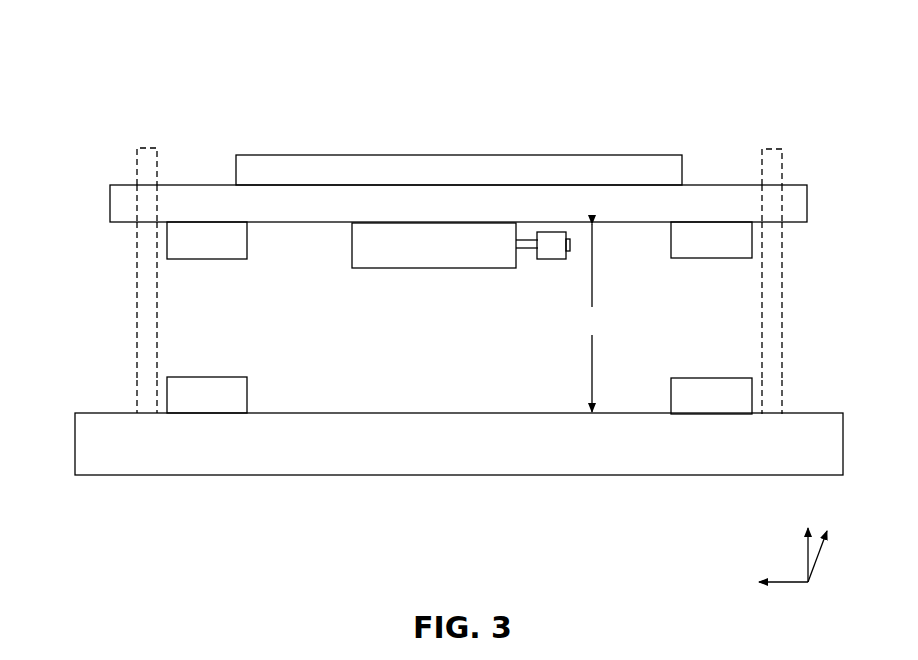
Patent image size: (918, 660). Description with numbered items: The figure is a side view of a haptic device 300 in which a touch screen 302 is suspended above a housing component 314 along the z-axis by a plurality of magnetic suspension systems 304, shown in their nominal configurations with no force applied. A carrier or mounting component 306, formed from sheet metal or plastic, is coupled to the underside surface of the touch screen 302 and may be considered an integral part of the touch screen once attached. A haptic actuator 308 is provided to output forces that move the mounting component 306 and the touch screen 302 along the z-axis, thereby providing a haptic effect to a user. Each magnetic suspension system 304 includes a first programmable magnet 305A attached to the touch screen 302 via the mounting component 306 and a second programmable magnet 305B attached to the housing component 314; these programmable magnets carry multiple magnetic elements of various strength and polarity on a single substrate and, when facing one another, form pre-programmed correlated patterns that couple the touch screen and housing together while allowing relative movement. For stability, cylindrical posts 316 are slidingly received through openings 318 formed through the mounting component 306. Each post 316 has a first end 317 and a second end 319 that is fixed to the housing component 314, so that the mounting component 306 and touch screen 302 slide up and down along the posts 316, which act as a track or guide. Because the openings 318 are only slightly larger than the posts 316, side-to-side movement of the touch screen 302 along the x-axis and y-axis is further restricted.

The haptic device 300 is at (107, 131).
The touch screen 302 is at (452, 163).
The magnetic suspension system 304 is at (459, 284).
The first programmable magnet 305A is at (459, 240).
The second programmable magnet 305B is at (236, 406).
The mounting component 306 is at (698, 207).
The haptic actuator 308 is at (450, 256).
The housing component 314 is at (295, 457).
The post 316 is at (145, 313).
The first end 317 is at (145, 147).
The opening 318 is at (135, 207).
The second end 319 is at (150, 413).